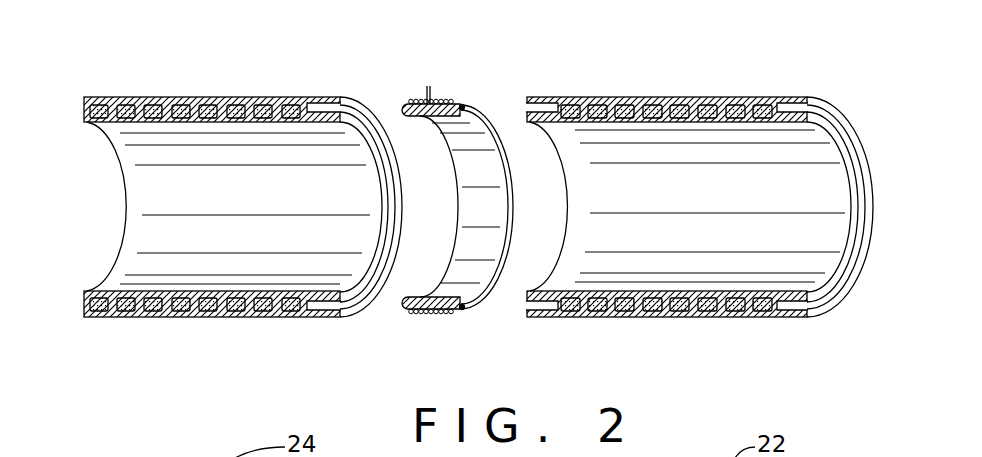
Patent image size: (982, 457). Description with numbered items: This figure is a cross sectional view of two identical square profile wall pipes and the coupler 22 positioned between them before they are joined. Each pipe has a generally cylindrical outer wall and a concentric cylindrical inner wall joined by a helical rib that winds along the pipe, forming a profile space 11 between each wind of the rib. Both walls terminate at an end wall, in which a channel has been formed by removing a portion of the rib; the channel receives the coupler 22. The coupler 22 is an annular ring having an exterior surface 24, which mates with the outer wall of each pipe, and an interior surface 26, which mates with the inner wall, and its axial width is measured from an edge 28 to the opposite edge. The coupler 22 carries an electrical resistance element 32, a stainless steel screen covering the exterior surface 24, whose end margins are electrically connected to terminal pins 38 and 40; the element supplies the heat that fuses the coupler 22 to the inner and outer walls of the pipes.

The profile space 11 is at (676, 201).
The coupler 22 is at (495, 189).
The exterior surface 24 is at (518, 242).
The interior surface 26 is at (486, 196).
The edge 28 is at (465, 104).
The electrical resistance element 32 is at (398, 101).
The terminal pin 38 is at (421, 82).
The terminal pin 40 is at (435, 83).